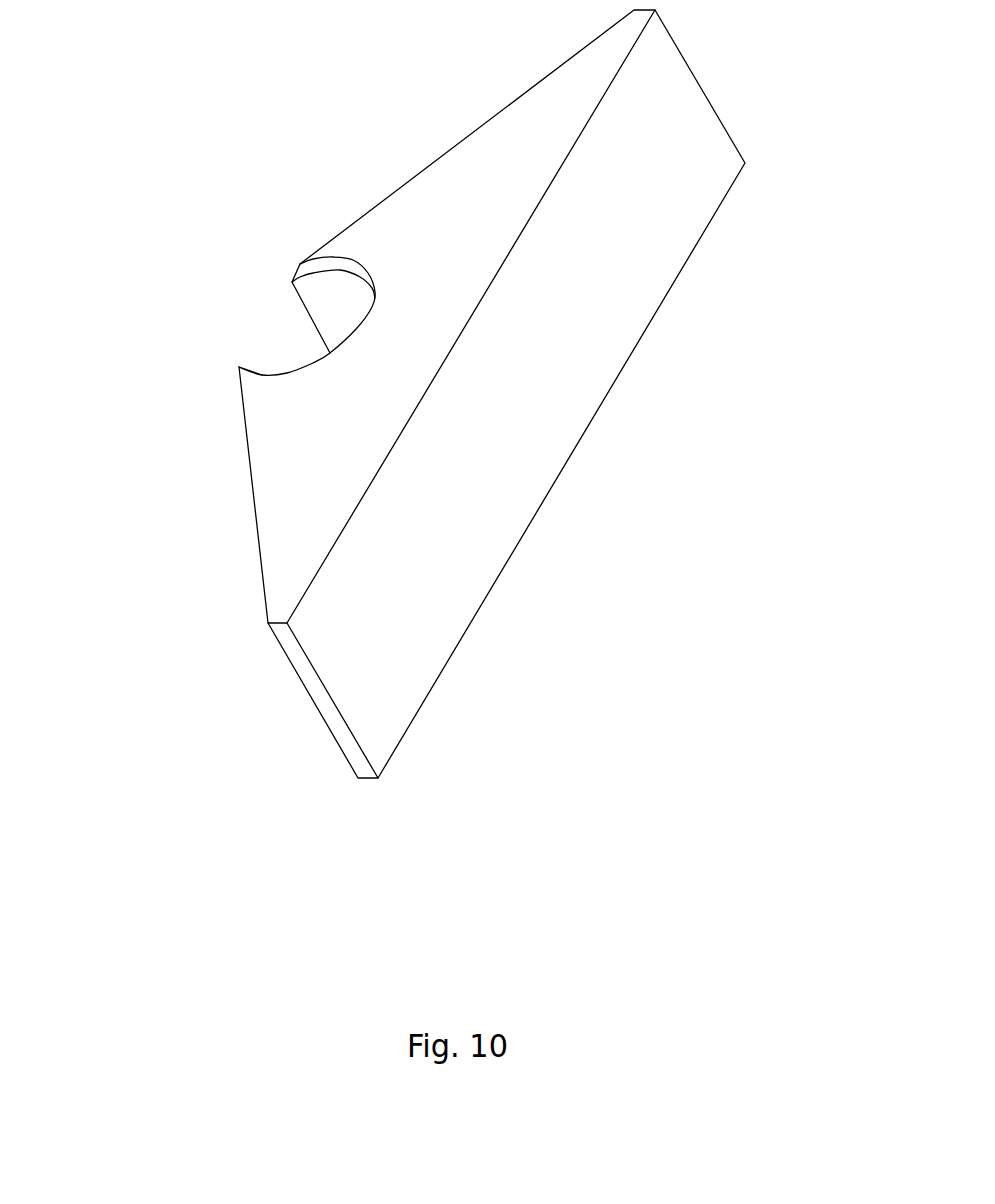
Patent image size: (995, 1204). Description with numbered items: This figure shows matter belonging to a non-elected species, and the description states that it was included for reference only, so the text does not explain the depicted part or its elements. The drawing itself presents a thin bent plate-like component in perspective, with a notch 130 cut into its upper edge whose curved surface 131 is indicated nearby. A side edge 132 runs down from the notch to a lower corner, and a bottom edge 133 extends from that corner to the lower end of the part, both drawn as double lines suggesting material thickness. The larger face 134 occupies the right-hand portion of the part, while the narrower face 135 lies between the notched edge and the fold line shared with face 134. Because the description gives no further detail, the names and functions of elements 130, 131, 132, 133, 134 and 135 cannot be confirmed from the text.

The notch 130 is at (337, 307).
The arcuate surface of notch 131 is at (339, 266).
The side edge 132 is at (253, 502).
The bottom edge 133 is at (317, 685).
The second plate portion 134 is at (533, 388).
The first plate portion 135 is at (432, 223).